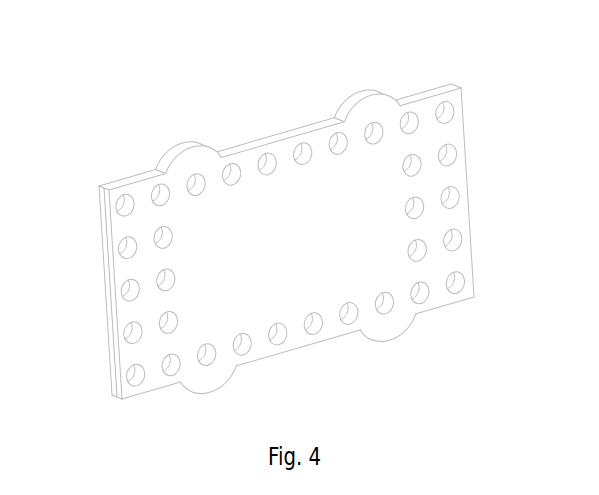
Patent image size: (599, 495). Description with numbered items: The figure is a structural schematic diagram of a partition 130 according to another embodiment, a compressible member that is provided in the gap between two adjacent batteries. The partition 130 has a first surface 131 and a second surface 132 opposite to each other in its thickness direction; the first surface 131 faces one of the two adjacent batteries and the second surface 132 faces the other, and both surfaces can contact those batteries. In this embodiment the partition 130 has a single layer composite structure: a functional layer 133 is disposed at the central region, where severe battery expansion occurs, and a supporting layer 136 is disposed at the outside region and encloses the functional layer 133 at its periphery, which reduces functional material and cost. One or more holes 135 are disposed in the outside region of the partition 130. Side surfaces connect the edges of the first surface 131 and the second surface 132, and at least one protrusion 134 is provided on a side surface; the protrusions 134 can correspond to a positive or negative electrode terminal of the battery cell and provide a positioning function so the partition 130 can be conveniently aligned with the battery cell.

The partition 130 is at (295, 227).
The first surface 131 is at (298, 349).
The second surface 132 is at (104, 289).
The functional layer 133 is at (284, 285).
The protrusion 134 is at (397, 333).
The holes 135 is at (455, 193).
The supporting layer 136 is at (452, 262).